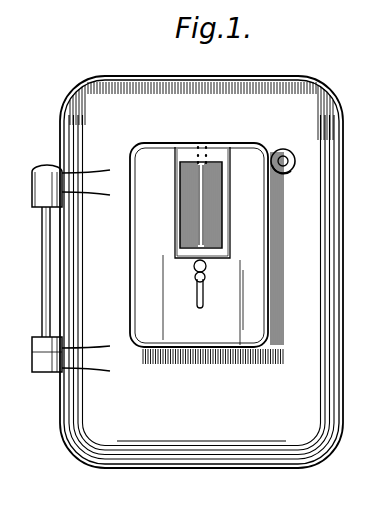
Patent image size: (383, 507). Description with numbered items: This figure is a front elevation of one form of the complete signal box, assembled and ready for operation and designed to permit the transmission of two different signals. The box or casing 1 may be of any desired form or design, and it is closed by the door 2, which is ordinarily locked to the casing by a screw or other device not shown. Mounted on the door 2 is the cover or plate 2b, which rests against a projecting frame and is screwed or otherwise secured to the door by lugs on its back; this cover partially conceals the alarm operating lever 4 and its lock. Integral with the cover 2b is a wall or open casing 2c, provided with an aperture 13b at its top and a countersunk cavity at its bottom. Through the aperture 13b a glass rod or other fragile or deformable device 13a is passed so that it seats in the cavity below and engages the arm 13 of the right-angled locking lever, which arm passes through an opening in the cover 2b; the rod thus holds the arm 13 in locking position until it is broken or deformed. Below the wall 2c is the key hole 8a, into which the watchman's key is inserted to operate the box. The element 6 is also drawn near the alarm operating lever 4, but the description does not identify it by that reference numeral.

The box or casing 1 is at (217, 80).
The door 2 is at (131, 289).
The cover or plate 2b is at (137, 248).
The wall or open casing 2c is at (231, 201).
The alarm operating lever 4 is at (283, 175).
The knob 6 is at (296, 161).
The key hole 8a is at (203, 292).
The arm of the locking lever 13 is at (212, 202).
The glass rod 13a is at (201, 218).
The aperture 13b is at (209, 145).